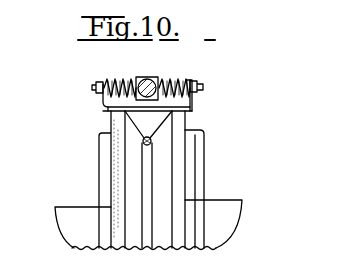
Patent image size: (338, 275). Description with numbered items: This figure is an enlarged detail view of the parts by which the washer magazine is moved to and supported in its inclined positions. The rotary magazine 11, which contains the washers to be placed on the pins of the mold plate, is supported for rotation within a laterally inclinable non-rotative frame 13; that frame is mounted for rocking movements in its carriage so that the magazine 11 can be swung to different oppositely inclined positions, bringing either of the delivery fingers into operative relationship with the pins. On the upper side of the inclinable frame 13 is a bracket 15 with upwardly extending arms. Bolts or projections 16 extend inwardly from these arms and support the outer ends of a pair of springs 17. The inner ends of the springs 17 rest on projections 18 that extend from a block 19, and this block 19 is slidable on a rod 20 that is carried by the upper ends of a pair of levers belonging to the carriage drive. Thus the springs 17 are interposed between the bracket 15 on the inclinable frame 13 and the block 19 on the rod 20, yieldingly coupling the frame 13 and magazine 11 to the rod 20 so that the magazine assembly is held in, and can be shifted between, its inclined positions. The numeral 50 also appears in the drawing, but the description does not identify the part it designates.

The rotary magazine 11 is at (164, 165).
The laterally inclinable non-rotative frame 13 is at (180, 192).
The bracket 15 is at (195, 77).
The bolts or projections 16 is at (97, 89).
The springs 17 is at (138, 120).
The projections 18 is at (128, 80).
The block 19 is at (158, 77).
The rod 20 is at (150, 78).
The pivot pin 50 is at (151, 138).